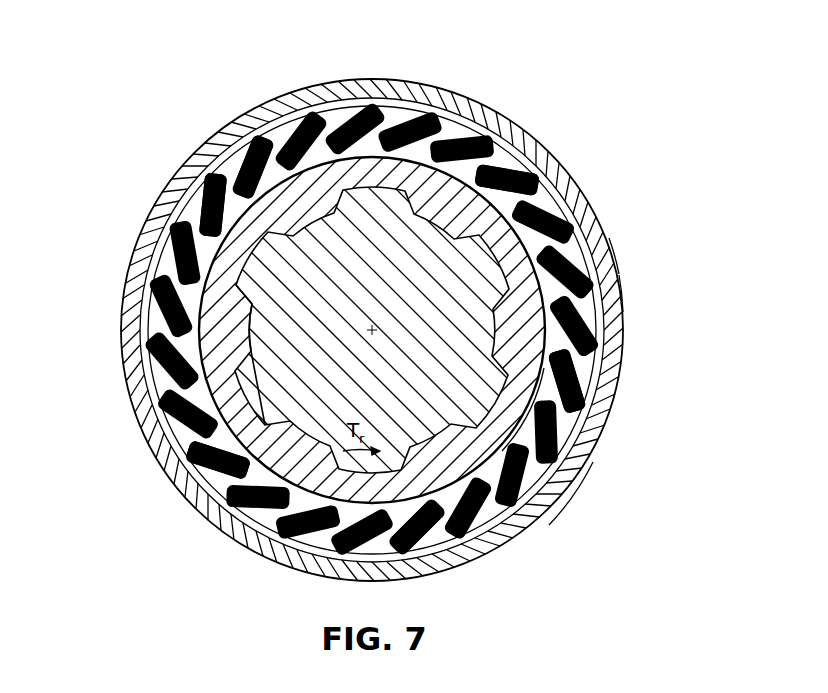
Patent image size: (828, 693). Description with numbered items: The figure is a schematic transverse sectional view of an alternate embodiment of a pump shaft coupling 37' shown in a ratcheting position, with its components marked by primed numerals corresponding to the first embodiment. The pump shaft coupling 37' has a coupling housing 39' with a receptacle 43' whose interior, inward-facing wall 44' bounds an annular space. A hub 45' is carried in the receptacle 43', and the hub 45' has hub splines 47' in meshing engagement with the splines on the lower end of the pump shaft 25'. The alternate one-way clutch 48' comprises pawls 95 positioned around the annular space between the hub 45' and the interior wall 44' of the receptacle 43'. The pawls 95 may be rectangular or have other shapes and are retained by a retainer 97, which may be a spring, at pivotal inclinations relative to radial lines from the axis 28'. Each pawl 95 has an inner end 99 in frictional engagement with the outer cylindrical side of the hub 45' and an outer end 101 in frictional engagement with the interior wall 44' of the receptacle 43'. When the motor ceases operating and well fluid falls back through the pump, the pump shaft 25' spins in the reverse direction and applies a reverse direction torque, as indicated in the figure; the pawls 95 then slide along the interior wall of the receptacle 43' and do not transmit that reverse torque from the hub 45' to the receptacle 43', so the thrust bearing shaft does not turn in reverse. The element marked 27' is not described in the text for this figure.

The shaft 27' is at (372, 265).
The pump shaft 25' is at (426, 330).
The hub splines 47' is at (158, 353).
The receptacle 43' is at (547, 158).
The interior wall 44' is at (147, 205).
The hub 45' is at (206, 148).
The axis 28' is at (133, 476).
The one-way clutch 48' is at (418, 330).
The pump shaft coupling 37' is at (666, 251).
The coupling housing 39' is at (411, 330).
The pawls 95 is at (618, 300).
The retainer 97 is at (577, 363).
The inner end 99 is at (503, 430).
The outer end 101 is at (568, 478).